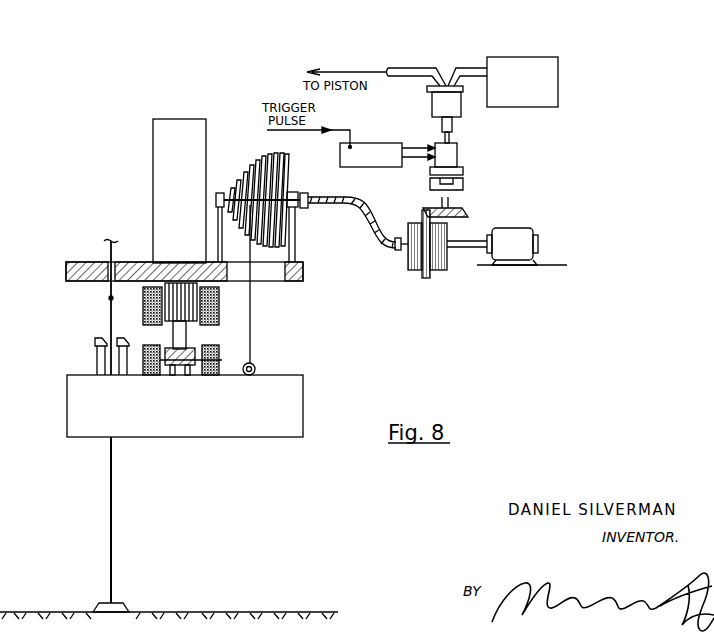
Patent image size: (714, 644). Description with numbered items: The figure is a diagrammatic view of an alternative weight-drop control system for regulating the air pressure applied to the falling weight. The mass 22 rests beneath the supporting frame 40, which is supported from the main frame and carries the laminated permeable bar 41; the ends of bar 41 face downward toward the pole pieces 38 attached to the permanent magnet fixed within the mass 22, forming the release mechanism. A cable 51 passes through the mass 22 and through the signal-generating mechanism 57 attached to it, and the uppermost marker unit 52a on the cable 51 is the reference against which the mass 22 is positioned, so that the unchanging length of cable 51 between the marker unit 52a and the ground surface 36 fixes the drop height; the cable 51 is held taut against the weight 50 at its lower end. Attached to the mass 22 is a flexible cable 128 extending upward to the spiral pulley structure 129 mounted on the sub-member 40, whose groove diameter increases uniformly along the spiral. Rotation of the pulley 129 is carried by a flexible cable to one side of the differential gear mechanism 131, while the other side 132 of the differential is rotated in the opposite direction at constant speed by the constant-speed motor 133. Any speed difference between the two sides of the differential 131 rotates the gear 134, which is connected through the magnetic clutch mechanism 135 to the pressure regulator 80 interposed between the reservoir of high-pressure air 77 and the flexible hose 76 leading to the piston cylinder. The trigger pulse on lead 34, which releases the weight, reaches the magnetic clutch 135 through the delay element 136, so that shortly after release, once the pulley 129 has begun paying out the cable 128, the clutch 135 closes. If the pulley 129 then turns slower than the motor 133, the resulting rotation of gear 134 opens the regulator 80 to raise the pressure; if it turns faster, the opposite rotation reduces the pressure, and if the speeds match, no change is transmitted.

The mass 22 is at (293, 403).
The lead 34 is at (340, 126).
The ground surface 36 is at (193, 612).
The pole pieces 38 is at (222, 358).
The supporting frame 40 is at (303, 267).
The laminated permeable bar 41 is at (222, 303).
The weight 50 is at (118, 603).
The cable 51 is at (113, 532).
The uppermost marker unit 52a is at (108, 298).
The signal-generating mechanism 57 is at (97, 357).
The flexible hose 76 is at (407, 67).
The reservoir of high-pressure air 77 is at (558, 80).
The pressure regulator 80 is at (458, 104).
The flexible cable 128 is at (252, 326).
The pulley structure 129 is at (258, 160).
The differential gear mechanism 131 is at (408, 270).
The other side of the differential 132 is at (448, 233).
The constant-speed motor 133 is at (538, 237).
The gear 134 is at (468, 213).
The magnetic clutch mechanism 135 is at (462, 156).
The delay element 136 is at (352, 162).